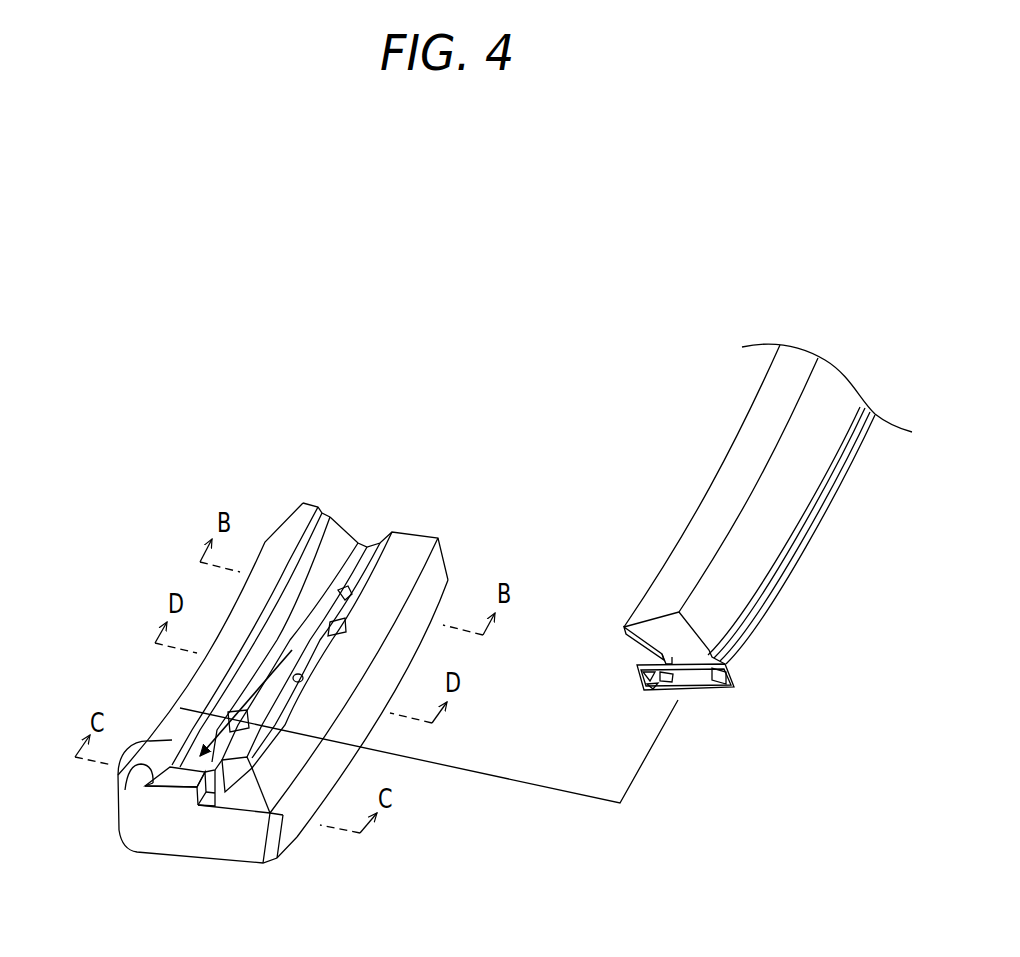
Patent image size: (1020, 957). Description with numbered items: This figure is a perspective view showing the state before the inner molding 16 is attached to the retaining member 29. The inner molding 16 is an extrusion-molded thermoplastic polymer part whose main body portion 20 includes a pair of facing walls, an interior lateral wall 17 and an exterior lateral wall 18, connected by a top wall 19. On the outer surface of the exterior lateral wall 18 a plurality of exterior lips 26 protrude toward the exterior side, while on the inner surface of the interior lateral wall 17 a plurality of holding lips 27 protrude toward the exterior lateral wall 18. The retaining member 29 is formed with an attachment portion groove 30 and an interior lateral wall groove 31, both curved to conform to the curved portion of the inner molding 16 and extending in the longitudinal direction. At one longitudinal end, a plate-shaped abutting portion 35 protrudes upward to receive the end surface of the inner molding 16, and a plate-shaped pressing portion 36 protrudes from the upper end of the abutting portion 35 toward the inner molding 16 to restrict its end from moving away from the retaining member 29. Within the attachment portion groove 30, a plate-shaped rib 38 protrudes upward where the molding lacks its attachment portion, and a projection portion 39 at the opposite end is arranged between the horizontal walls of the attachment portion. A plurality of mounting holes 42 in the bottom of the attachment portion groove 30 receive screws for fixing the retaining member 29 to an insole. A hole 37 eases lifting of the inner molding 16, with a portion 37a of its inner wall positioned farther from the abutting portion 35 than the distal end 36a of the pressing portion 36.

The inner molding 16 is at (712, 470).
The interior lateral wall 17 is at (667, 695).
The exterior lateral wall 18 is at (647, 660).
The top wall 19 is at (637, 683).
The main body portion 20 is at (643, 673).
The exterior lips 26 is at (713, 587).
The holding lips 27 is at (662, 677).
The retaining member 29 is at (302, 838).
The attachment portion groove 30 is at (364, 546).
The interior lateral wall groove 31 is at (320, 520).
The abutting portion 35 is at (200, 806).
The pressing portion 36 is at (118, 822).
The distal end 36a is at (133, 745).
The hole 37 is at (206, 810).
The portion of an inner wall 37a is at (203, 768).
The rib 38 is at (214, 815).
The projection portion 39 is at (375, 546).
The mounting holes 42 is at (297, 673).